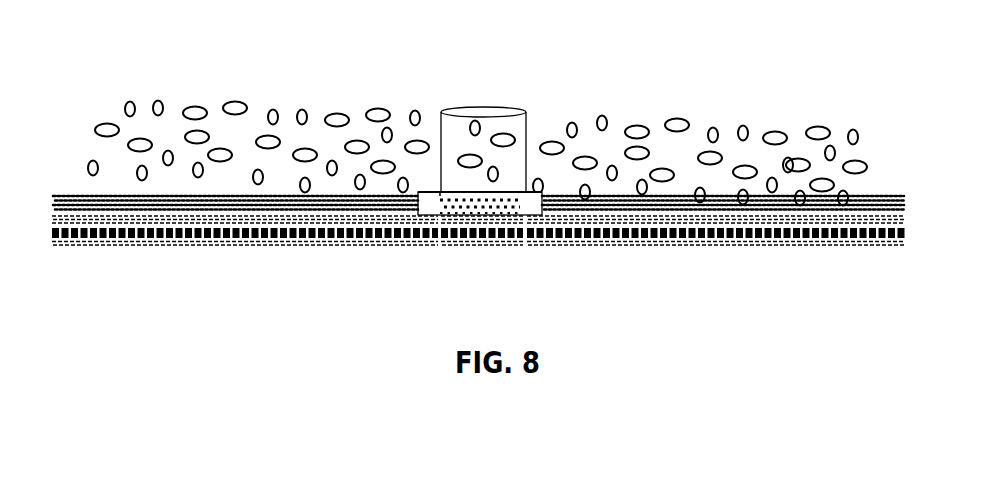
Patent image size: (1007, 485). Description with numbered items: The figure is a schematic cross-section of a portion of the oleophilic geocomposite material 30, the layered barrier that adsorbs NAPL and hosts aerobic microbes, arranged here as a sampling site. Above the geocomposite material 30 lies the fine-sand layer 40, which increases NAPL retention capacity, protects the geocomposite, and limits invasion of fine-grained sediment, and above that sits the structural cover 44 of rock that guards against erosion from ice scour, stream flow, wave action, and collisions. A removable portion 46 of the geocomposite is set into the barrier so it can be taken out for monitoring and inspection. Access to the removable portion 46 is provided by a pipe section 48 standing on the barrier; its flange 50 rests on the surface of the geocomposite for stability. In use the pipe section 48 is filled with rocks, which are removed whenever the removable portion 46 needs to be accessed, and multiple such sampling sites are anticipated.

The oleophilic geocomposite material 30 is at (910, 228).
The fine-sand layer 40 is at (876, 200).
The structural cover 44 is at (452, 140).
The removable portion 46 is at (480, 236).
The pipe section 48 is at (530, 120).
The flange 50 is at (428, 203).